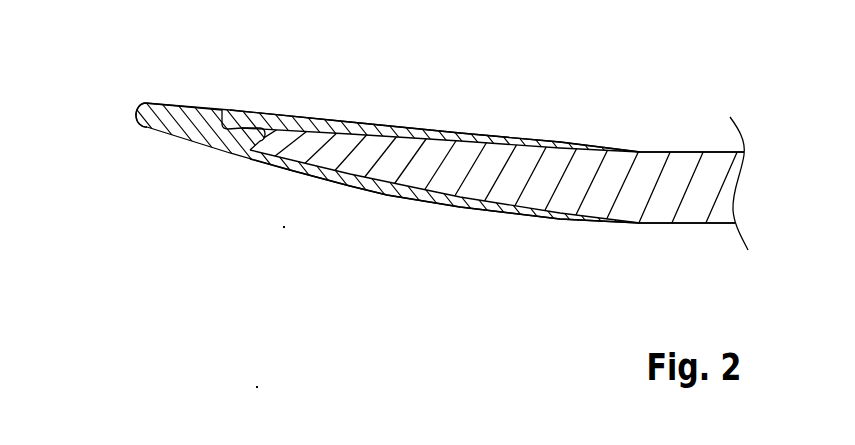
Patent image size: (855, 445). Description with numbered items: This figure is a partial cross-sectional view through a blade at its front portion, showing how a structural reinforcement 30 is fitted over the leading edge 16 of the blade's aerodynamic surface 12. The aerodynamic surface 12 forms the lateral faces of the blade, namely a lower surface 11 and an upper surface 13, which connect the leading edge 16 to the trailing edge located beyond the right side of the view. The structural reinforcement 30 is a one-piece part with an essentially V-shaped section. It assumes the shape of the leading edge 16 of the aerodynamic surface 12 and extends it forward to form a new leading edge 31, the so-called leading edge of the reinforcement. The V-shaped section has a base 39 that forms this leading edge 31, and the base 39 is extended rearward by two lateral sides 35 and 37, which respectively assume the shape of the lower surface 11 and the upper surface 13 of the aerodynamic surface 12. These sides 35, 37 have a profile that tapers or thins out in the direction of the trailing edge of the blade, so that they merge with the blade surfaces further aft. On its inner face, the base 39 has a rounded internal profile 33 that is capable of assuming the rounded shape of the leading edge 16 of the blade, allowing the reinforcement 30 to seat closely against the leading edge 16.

The lower surface 11 is at (707, 152).
The aerodynamic surface 12 is at (518, 193).
The upper surface 13 is at (668, 223).
The leading edge 16 is at (224, 113).
The structural reinforcement 30 is at (199, 155).
The leading edge of the reinforcement 31 is at (137, 113).
The rounded internal profile 33 is at (258, 142).
The lateral side 35 is at (461, 132).
The lateral side 37 is at (386, 197).
The base 39 is at (172, 120).